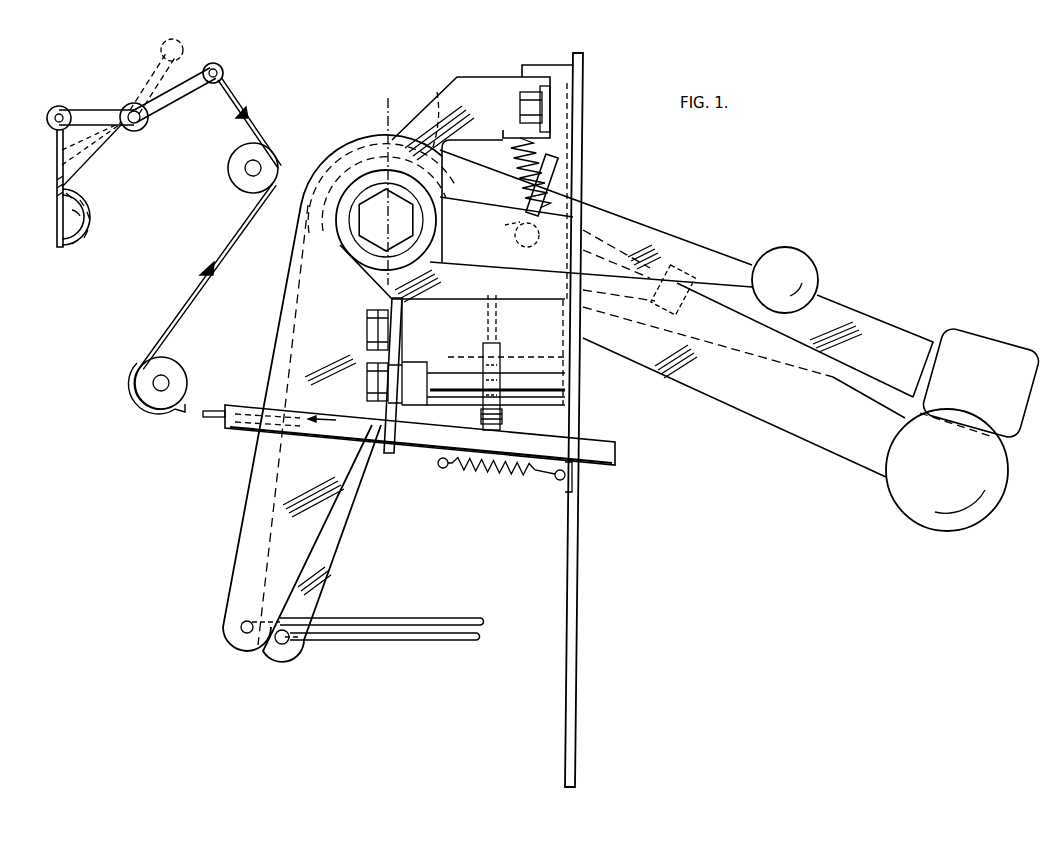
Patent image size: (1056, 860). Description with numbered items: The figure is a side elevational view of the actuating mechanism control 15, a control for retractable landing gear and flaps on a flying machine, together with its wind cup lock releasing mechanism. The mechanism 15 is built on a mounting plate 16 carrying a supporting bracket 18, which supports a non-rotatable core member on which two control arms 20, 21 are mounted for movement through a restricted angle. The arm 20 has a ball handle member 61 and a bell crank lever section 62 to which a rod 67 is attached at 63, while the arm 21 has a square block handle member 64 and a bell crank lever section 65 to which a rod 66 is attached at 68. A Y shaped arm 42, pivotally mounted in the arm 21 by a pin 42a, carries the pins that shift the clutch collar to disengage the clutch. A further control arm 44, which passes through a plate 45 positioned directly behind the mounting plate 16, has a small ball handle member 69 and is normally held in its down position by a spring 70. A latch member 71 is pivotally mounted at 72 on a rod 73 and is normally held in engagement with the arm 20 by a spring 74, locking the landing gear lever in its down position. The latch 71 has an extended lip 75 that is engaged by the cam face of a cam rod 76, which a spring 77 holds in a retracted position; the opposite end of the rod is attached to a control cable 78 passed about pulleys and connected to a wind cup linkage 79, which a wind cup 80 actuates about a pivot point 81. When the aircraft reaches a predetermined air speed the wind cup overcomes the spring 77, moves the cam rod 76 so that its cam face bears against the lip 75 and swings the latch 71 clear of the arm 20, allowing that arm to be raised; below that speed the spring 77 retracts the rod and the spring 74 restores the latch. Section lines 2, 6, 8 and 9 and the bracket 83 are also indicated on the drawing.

The section line 2- 2 is at (283, 52).
The section line 6- 6 is at (398, 111).
The section line 8- 8 is at (562, 146).
The section line 9- 9 is at (212, 398).
The actuating mechanism control 15 is at (644, 486).
The mounting plate 16 is at (577, 620).
The supporting bracket 18 is at (482, 78).
The control arm 20 is at (795, 430).
The control arm 21 is at (892, 304).
The Y shaped arm 42 is at (440, 100).
The pin 42a is at (670, 268).
The control arm 44 is at (626, 236).
The plate 45 is at (575, 175).
The ball handle member 61 is at (993, 512).
The bell crank lever section 62 is at (252, 497).
The attachment point 63 is at (240, 633).
The square block handle member 64 is at (1000, 340).
The bell crank lever section 65 is at (326, 578).
The rod 66 is at (392, 645).
The rod 67 is at (386, 619).
The attachment point 68 is at (288, 652).
The small ball handle member 69 is at (802, 230).
The spring 70 is at (505, 150).
The latch member 71 is at (560, 184).
The pivot 72 is at (480, 372).
The rod 73 is at (553, 375).
The spring 74 is at (512, 234).
The extended lip 75 is at (486, 415).
The cam rod 76 is at (325, 418).
The spring 77 is at (518, 477).
The control cable 78 is at (183, 410).
The wind cup linkage 79 is at (114, 96).
The wind cup 80 is at (77, 240).
The pivot point 81 is at (137, 125).
The bracket bar 83 is at (393, 455).